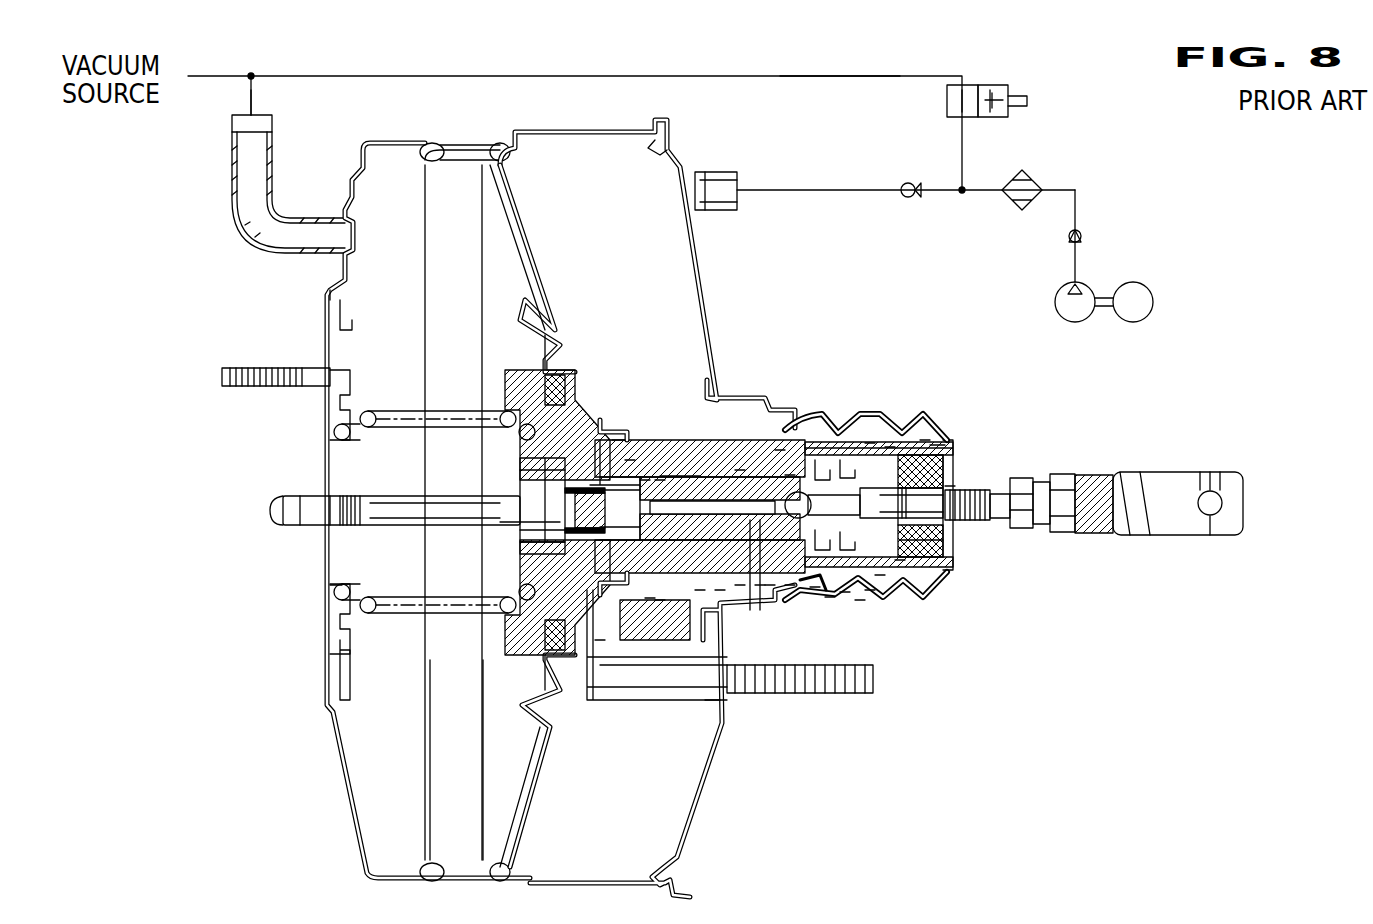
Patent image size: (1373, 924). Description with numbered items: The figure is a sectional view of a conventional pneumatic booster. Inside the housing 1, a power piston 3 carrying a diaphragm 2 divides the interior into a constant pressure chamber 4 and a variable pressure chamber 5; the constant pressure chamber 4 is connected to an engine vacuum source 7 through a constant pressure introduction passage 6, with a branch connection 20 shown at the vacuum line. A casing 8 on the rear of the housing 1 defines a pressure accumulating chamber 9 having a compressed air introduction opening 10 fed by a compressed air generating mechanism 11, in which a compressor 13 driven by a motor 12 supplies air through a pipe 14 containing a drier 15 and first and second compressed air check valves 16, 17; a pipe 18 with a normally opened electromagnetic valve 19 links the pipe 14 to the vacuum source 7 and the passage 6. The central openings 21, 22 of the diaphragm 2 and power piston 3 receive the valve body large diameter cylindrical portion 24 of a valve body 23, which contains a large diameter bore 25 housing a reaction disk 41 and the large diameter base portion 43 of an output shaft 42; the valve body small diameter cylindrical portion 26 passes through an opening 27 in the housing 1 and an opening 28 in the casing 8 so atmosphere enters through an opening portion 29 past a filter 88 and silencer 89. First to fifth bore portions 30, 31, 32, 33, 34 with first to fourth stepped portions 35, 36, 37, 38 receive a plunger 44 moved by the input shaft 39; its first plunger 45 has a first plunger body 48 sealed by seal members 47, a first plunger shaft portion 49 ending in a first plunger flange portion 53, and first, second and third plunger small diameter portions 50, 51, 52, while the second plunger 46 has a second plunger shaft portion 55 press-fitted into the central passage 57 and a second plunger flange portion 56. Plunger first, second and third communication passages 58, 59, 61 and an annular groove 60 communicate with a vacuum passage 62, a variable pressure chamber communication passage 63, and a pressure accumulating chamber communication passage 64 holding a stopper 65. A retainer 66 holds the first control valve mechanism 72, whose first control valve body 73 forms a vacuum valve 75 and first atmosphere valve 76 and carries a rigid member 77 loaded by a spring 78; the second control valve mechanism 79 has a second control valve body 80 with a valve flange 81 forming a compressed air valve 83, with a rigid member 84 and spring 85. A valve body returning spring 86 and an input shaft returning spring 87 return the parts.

The housing 1 is at (315, 724).
The diaphragm 2 is at (425, 143).
The power piston 3 is at (525, 270).
The constant pressure chamber 4 is at (350, 165).
The variable pressure chamber 5 is at (480, 143).
The constant pressure introduction passage 6 is at (233, 190).
The vacuum source 7 is at (562, 126).
The casing 8 is at (672, 147).
The pressure accumulating chamber 9 is at (575, 160).
The compressed air introduction opening 10 is at (725, 185).
The compressed air generating mechanism 11 is at (1110, 136).
The motor 12 is at (1155, 292).
The compressor 13 is at (1092, 286).
The pipe 14 is at (835, 190).
The drier 15 is at (1030, 188).
The first compressed air check valve 16 is at (1082, 238).
The second compressed air check valve 17 is at (905, 183).
The pipe 18 is at (822, 76).
The electromagnetic valve 19 is at (1005, 95).
The branch line 20 is at (251, 95).
The central opening 21 is at (500, 600).
The central opening 22 is at (490, 660).
The valve body 23 is at (520, 350).
The valve body large diameter cylindrical portion 24 is at (440, 598).
The large diameter bore 25 is at (525, 548).
The valve body small diameter cylindrical portion 26 is at (640, 560).
The opening 27 is at (600, 640).
The opening 28 is at (800, 600).
The opening portion 29 is at (900, 560).
The first bore portion 30 is at (880, 575).
The second bore portion 31 is at (860, 600).
The third bore portion 32 is at (700, 590).
The fourth bore portion 33 is at (618, 435).
The fifth bore portion 34 is at (610, 420).
The first stepped portion 35 is at (870, 590).
The second stepped portion 36 is at (815, 585).
The third stepped portion 37 is at (640, 600).
The fourth stepped portion 38 is at (525, 522).
The input shaft 39 is at (1180, 488).
The reaction disk 41 is at (520, 470).
The output shaft 42 is at (292, 515).
The large diameter base portion 43 is at (530, 485).
The plunger 44 is at (740, 582).
The first plunger 45 is at (760, 586).
The second plunger 46 is at (512, 506).
The seal members 47 is at (760, 450).
The first plunger body 48 is at (840, 693).
The first plunger shaft portion 49 is at (830, 440).
The first plunger small diameter portion 50 is at (720, 450).
The second plunger small diameter portion 51 is at (700, 440).
The third plunger small diameter portion 52 is at (690, 440).
The first plunger flange portion 53 is at (830, 595).
The second plunger shaft portion 55 is at (587, 510).
The second plunger flange portion 56 is at (630, 455).
The central passage 57 is at (790, 470).
The plunger first communication passage 58 is at (810, 430).
The plunger second communication passage 59 is at (740, 460).
The annular groove 60 is at (780, 445).
The plunger third communication passage 61 is at (720, 590).
The vacuum passage 62 is at (560, 420).
The variable pressure chamber communication passage 63 is at (340, 592).
The pressure accumulating chamber communication passage 64 is at (770, 582).
The stopper 65 is at (790, 582).
The retainer 66 is at (950, 470).
The first control valve mechanism 72 is at (1004, 350).
The first control valve body 73 is at (930, 440).
The vacuum valve 75 is at (870, 440).
The first atmosphere valve 76 is at (890, 445).
The rigid member 77 is at (845, 592).
The spring 78 is at (935, 445).
The second control valve mechanism 79 is at (680, 450).
The second control valve body 80 is at (705, 700).
The valve flange 81 is at (650, 595).
The compressed air valve 83 is at (660, 600).
The rigid member 84 is at (660, 450).
The spring 85 is at (645, 470).
The valve body returning spring 86 is at (370, 412).
The input shaft returning spring 87 is at (950, 492).
The filter 88 is at (920, 530).
The silencer 89 is at (910, 545).